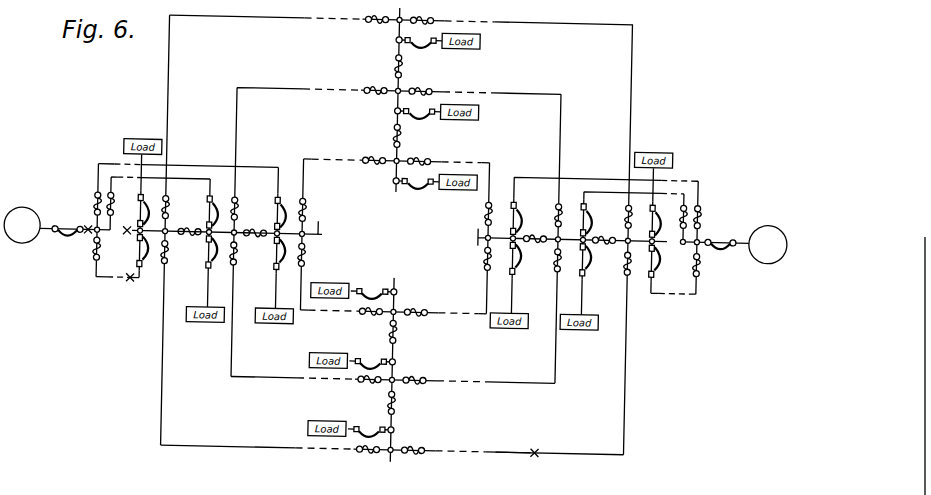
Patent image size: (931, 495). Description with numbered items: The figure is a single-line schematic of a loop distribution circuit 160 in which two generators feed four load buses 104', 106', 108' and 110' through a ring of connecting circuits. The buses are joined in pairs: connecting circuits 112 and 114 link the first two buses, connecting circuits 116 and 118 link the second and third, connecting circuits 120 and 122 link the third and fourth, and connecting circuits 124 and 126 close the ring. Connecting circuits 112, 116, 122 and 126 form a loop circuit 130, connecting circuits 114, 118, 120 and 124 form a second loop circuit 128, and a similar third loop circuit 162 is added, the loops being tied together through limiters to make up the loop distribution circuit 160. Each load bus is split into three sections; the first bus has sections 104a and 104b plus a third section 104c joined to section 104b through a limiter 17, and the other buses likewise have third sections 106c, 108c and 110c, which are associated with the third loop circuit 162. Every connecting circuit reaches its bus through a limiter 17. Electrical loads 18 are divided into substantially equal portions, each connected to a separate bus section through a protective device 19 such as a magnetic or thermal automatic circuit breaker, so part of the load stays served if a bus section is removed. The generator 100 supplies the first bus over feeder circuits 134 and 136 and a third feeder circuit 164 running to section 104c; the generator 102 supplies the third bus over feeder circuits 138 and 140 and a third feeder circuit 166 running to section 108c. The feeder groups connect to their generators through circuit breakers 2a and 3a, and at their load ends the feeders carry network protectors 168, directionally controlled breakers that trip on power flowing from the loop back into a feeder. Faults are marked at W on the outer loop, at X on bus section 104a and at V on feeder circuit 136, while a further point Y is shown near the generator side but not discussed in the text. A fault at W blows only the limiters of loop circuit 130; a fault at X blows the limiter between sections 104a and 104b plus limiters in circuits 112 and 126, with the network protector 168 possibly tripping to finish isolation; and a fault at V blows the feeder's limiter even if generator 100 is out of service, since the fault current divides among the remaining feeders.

The generator 100 is at (30, 214).
The generator 102 is at (775, 257).
The circuit breaker 2a is at (72, 245).
The circuit breaker 3a is at (733, 243).
The limiter 17 is at (93, 260).
The electrical loads 18 is at (206, 327).
The protective device 19 is at (214, 256).
The fault X is at (127, 228).
The switch point Y is at (88, 244).
The fault V is at (134, 288).
The fault W is at (539, 456).
The load bus section 104a is at (132, 208).
The load bus section 104b is at (236, 241).
The third load bus section 104c is at (316, 240).
The load bus 104' is at (240, 215).
The load bus 106' is at (402, 99).
The third load bus section 106c is at (392, 183).
The third load bus section 108c is at (479, 232).
The load bus 108' is at (531, 247).
The third load bus section 110c is at (397, 283).
The load bus 110' is at (373, 373).
The connecting circuit 112 is at (245, 20).
The connecting circuit 114 is at (274, 91).
The connecting circuit 116 is at (578, 22).
The connecting circuit 118 is at (517, 91).
The connecting circuit 120 is at (515, 380).
The connecting circuit 122 is at (518, 450).
The connecting circuit 124 is at (283, 380).
The connecting circuit 126 is at (283, 450).
The loop circuit 128 is at (548, 381).
The loop circuit 130 is at (577, 450).
The feeder circuit 134 is at (206, 185).
The feeder circuit 136 is at (116, 234).
The feeder circuit 138 is at (686, 198).
The feeder circuit 140 is at (699, 289).
The loop distribution circuit 160 is at (407, 243).
The third loop circuit 162 is at (430, 313).
The third feeder circuit 164 is at (216, 169).
The third feeder circuit 166 is at (613, 174).
The network protector 168 is at (216, 200).